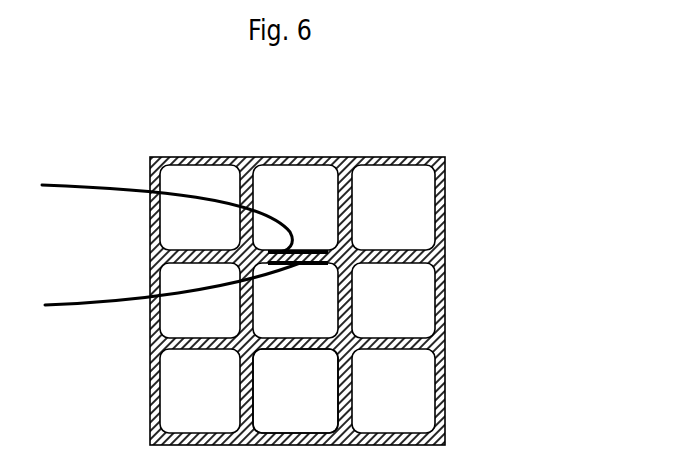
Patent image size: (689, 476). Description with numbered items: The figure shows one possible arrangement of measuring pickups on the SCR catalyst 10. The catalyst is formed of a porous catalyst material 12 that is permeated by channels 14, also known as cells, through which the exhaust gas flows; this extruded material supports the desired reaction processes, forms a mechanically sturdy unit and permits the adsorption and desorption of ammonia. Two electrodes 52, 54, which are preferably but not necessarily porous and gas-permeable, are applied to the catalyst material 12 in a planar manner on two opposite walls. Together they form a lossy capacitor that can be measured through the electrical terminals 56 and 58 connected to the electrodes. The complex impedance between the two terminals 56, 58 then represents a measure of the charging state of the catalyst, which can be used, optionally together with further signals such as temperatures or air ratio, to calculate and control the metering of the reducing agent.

The SCR catalyst 10 is at (513, 122).
The porous catalyst material 12 is at (445, 168).
The channels 14 is at (390, 367).
The electrode 52 is at (290, 252).
The electrode 54 is at (300, 263).
The electrical terminal 56 is at (162, 204).
The electrical terminal 58 is at (168, 308).